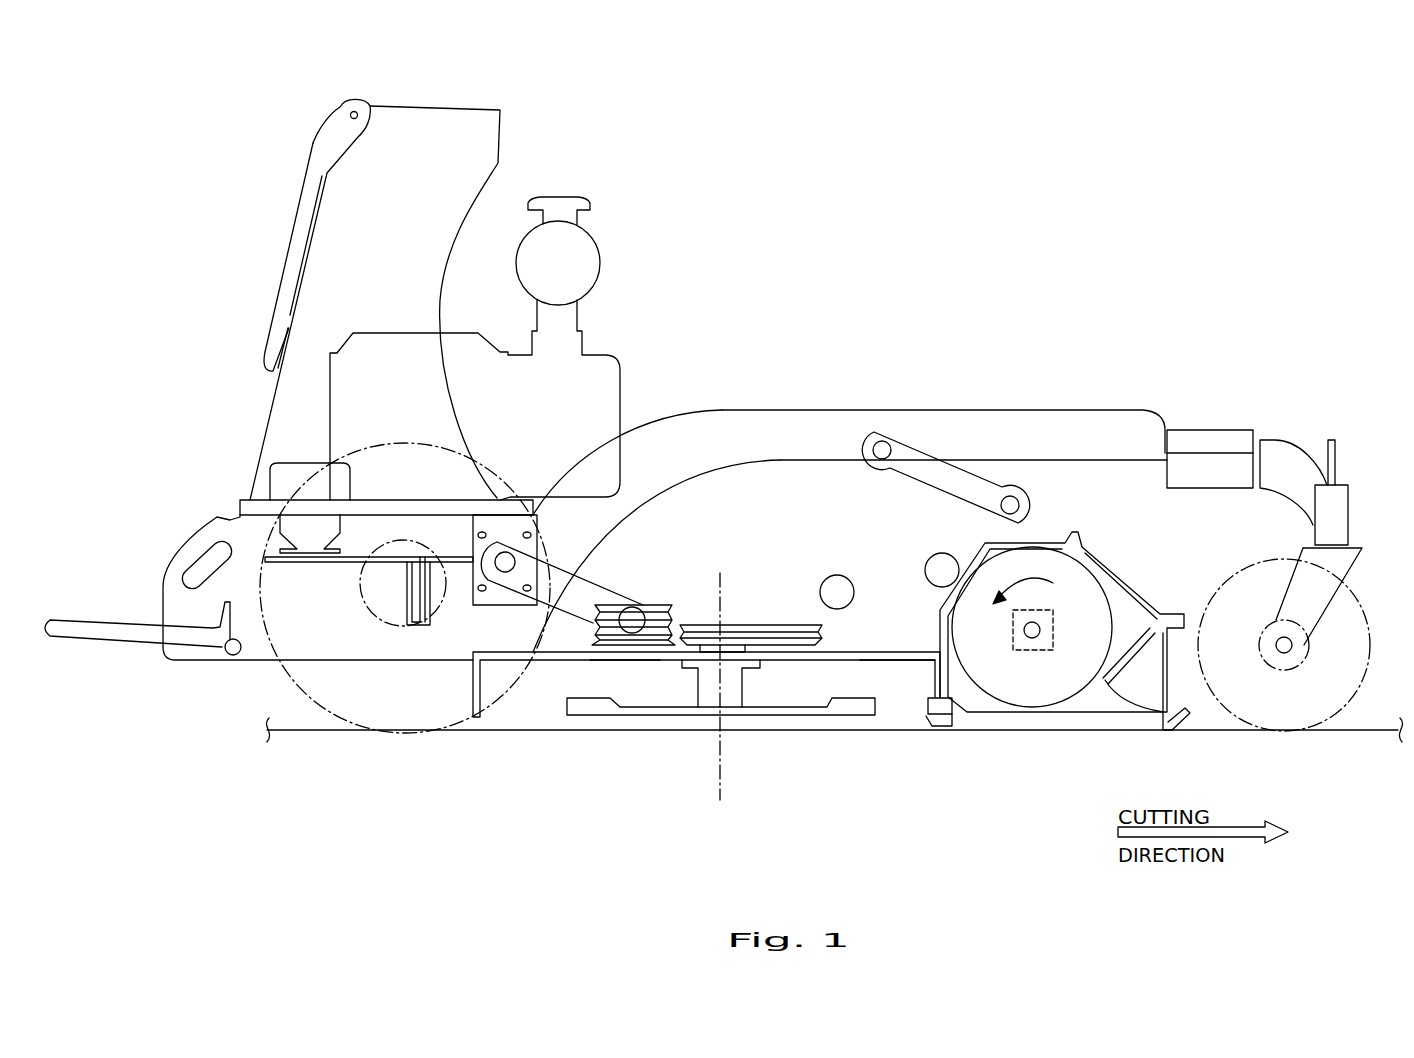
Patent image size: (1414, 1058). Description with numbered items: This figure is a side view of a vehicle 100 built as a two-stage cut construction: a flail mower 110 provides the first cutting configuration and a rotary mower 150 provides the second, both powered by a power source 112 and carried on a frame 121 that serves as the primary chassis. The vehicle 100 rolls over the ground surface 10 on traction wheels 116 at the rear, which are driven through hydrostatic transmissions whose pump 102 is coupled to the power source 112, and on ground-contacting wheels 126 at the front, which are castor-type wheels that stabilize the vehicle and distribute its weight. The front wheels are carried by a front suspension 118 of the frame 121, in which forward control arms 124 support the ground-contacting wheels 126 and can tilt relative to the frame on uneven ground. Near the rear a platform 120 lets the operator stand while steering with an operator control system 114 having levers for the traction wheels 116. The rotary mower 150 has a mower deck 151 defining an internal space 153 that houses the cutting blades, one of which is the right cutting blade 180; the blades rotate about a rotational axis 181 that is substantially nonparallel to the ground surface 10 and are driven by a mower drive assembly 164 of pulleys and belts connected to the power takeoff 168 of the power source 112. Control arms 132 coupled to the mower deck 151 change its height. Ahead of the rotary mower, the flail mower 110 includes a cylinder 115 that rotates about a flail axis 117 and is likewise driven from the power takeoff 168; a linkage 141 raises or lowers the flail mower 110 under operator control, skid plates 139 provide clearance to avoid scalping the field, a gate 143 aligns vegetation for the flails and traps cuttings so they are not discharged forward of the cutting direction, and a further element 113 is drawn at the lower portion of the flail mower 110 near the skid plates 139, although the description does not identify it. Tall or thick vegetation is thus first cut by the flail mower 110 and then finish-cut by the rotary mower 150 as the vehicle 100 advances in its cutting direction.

The vehicle 100 is at (181, 170).
The ground surface 10 is at (303, 732).
The pump 102 is at (290, 463).
The flail mower 110 is at (1103, 565).
The power source 112 is at (600, 270).
The lower bracket 113 is at (960, 717).
The operator control system 114 is at (340, 117).
The cylinder 115 is at (977, 687).
The traction wheels 116 is at (287, 673).
The flail axis 117 is at (1030, 643).
The front suspension 118 is at (1223, 391).
The platform 120 is at (115, 620).
The frame 121 is at (720, 410).
The forward control arms 124 is at (1340, 483).
The ground-contacting wheels 126 is at (1225, 715).
The control arms 132 is at (587, 580).
The skid plates 139 is at (928, 727).
The linkage 141 is at (927, 443).
The gate 143 is at (1130, 657).
The rotary mower 150 is at (538, 692).
The mower deck 151 is at (890, 661).
The internal space 153 is at (600, 690).
The mower drive assembly 164 is at (695, 587).
The power takeoff 168 is at (402, 610).
The right cutting blade 180 is at (628, 712).
The rotational axis 181 is at (720, 773).